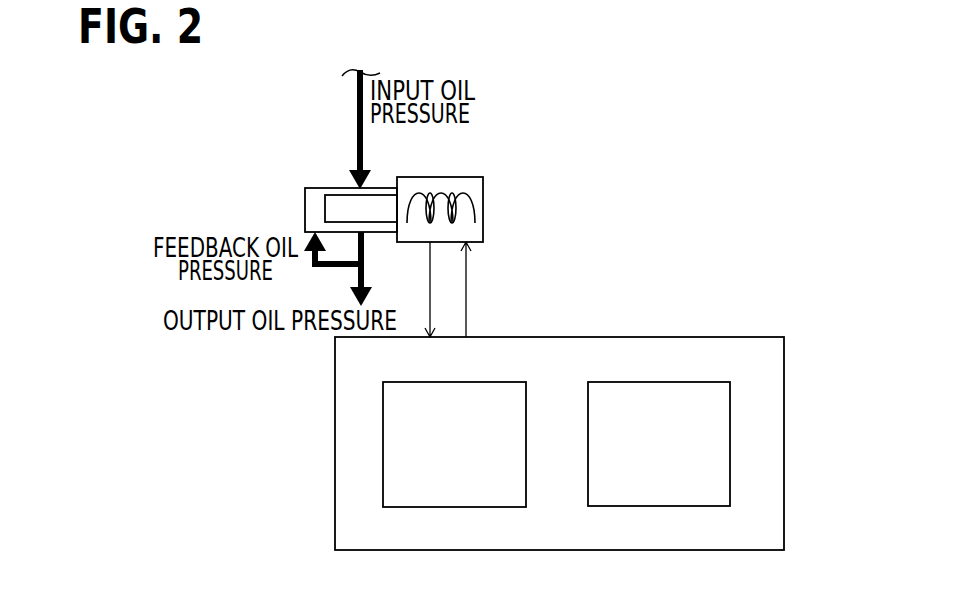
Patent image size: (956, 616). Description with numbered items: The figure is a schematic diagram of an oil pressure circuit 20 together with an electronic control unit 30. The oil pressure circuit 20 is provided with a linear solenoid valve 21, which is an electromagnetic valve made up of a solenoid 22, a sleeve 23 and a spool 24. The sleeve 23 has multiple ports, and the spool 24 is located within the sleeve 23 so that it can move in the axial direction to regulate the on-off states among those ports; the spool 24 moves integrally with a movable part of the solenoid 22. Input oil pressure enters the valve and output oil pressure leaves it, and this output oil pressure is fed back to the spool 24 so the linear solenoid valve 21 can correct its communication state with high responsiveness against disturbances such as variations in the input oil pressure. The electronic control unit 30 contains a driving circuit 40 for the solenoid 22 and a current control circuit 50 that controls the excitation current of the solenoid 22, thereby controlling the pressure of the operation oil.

The oil pressure circuit 20 is at (339, 147).
The linear solenoid valve 21 is at (485, 174).
The solenoid 22 is at (433, 190).
The sleeve 23 is at (310, 187).
The spool 24 is at (331, 118).
The electronic control unit 30 is at (768, 337).
The driving circuit 40 is at (517, 382).
The current control circuit 50 is at (713, 382).